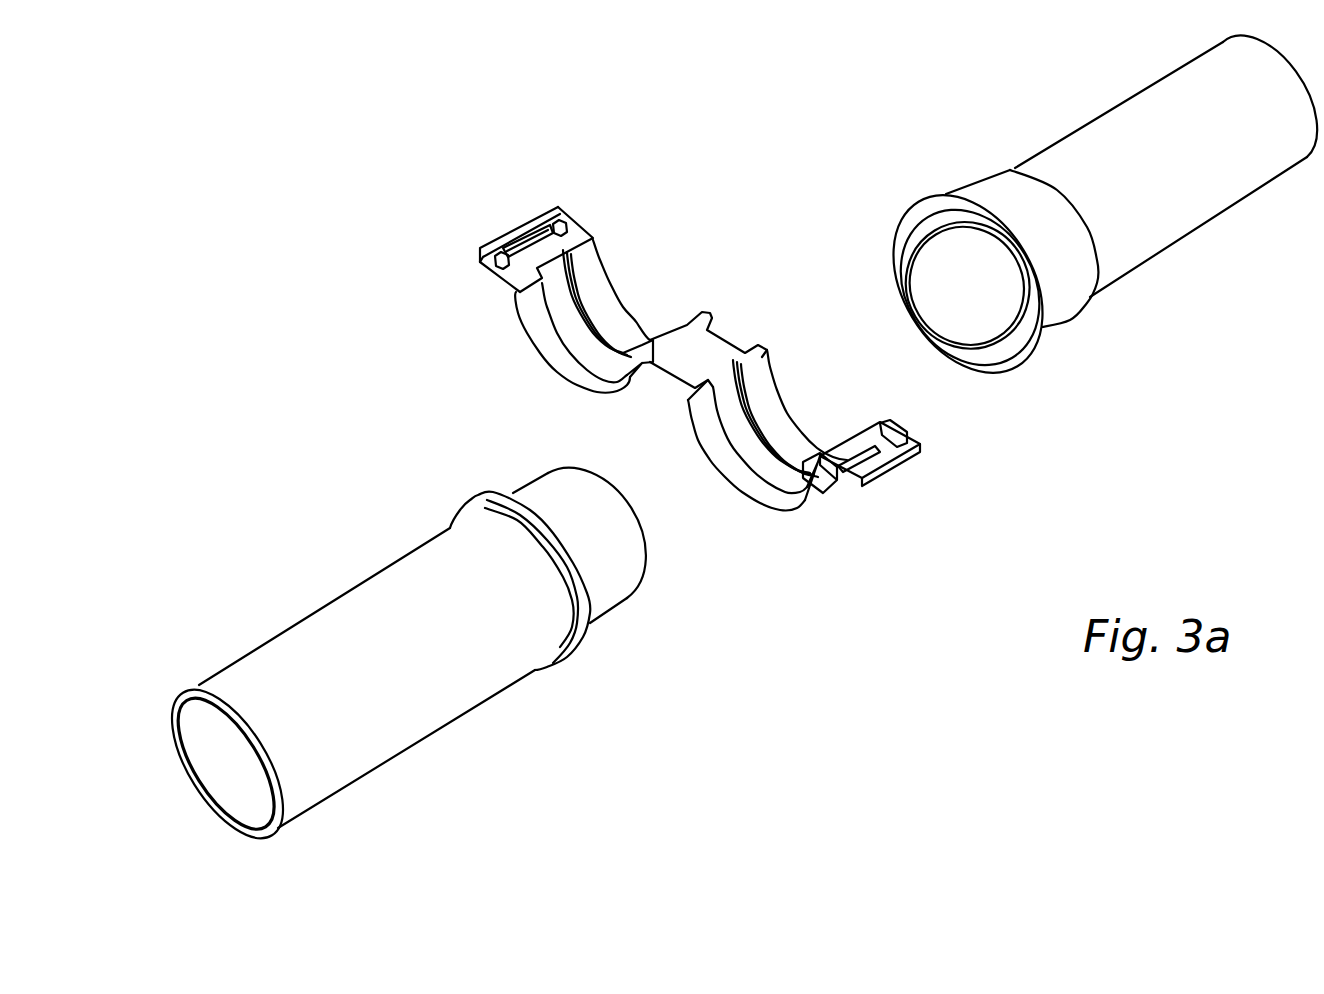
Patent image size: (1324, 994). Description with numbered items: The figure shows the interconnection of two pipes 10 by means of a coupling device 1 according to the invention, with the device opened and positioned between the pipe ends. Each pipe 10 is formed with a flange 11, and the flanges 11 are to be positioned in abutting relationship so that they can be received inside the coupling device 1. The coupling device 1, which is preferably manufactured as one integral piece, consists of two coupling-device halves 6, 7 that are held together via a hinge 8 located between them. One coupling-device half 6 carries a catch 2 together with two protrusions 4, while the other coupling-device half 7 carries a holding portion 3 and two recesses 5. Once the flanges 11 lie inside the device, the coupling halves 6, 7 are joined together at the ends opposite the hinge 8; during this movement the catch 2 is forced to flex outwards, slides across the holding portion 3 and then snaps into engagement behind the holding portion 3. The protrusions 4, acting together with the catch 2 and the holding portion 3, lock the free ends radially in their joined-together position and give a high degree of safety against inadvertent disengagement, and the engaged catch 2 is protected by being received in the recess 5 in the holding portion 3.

The coupling device 1 is at (669, 257).
The catch 2 is at (532, 232).
The holding portion 3 is at (878, 478).
The protrusions 4 is at (565, 225).
The recesses 5 is at (925, 443).
The coupling-device half 6 is at (555, 352).
The coupling-device half 7 is at (750, 490).
The hinge 8 is at (703, 352).
The pipes 10 is at (1148, 145).
The flanges 11 is at (1030, 340).